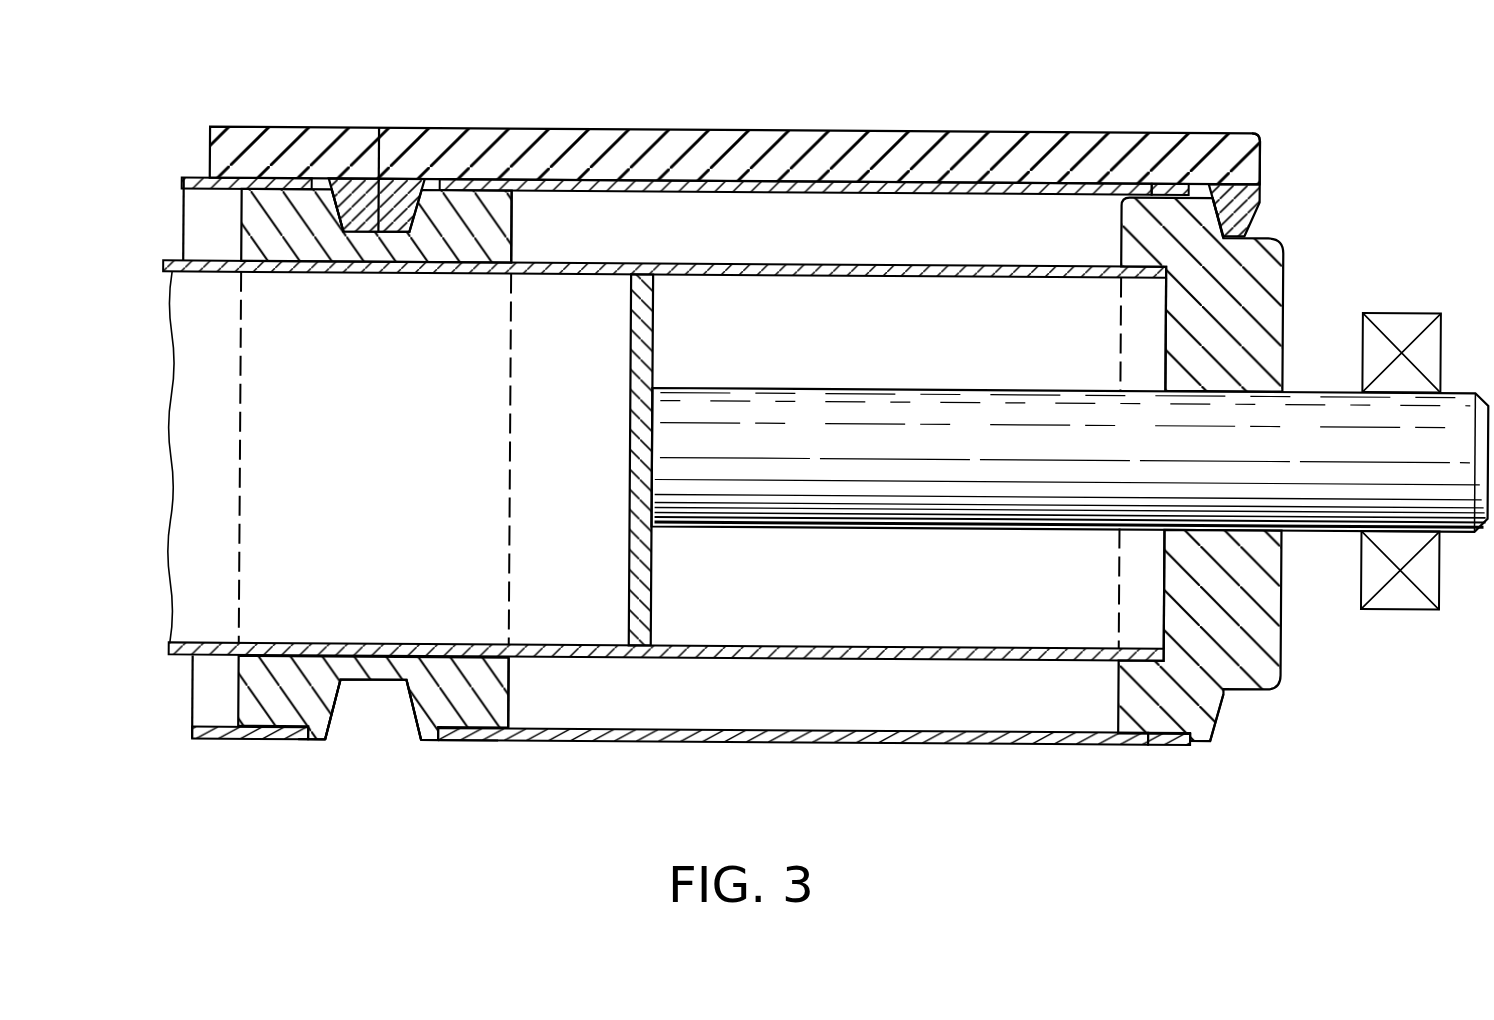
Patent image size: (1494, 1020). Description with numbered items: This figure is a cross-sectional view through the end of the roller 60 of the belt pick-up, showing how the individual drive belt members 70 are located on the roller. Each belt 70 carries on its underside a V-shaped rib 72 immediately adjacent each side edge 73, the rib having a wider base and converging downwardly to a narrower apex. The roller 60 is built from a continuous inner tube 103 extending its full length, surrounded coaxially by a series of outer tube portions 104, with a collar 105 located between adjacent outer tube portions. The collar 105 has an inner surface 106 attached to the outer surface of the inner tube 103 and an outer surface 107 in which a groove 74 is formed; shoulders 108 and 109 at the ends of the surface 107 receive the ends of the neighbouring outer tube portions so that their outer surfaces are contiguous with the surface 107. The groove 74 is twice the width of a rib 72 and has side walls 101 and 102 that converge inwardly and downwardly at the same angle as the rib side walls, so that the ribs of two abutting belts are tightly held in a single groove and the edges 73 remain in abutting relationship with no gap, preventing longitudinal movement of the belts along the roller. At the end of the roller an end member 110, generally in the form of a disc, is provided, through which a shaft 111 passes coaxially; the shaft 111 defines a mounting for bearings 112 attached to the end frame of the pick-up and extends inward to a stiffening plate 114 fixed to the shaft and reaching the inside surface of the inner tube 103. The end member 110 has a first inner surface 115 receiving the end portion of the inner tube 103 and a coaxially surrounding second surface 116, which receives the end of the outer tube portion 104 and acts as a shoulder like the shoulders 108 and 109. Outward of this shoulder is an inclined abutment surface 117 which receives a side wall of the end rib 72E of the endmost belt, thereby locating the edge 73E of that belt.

The roller 60 is at (824, 461).
The drive belt member 70 is at (284, 131).
The V-shaped rib 72 is at (320, 207).
The end rib 72E is at (1266, 208).
The side edge 73 is at (378, 131).
The edge of endmost belt 73E is at (1265, 154).
The groove 74 is at (377, 237).
The side wall of groove 101 is at (508, 196).
The side wall of groove 102 is at (327, 222).
The inner tube 103 is at (925, 256).
The outer tube portion 104 is at (752, 205).
The collar 105 is at (189, 178).
The inner surface of collar 106 is at (291, 646).
The outer surface of collar 107 is at (312, 752).
The shoulder 108 is at (266, 743).
The shoulder 109 is at (476, 742).
The end member 110 is at (1296, 272).
The shaft 111 is at (952, 380).
The bearing 112 is at (1401, 304).
The stiffening plate 114 is at (657, 345).
The first inner surface 115 is at (1146, 281).
The second surface 116 is at (1152, 187).
The abutment surface 117 is at (1207, 203).